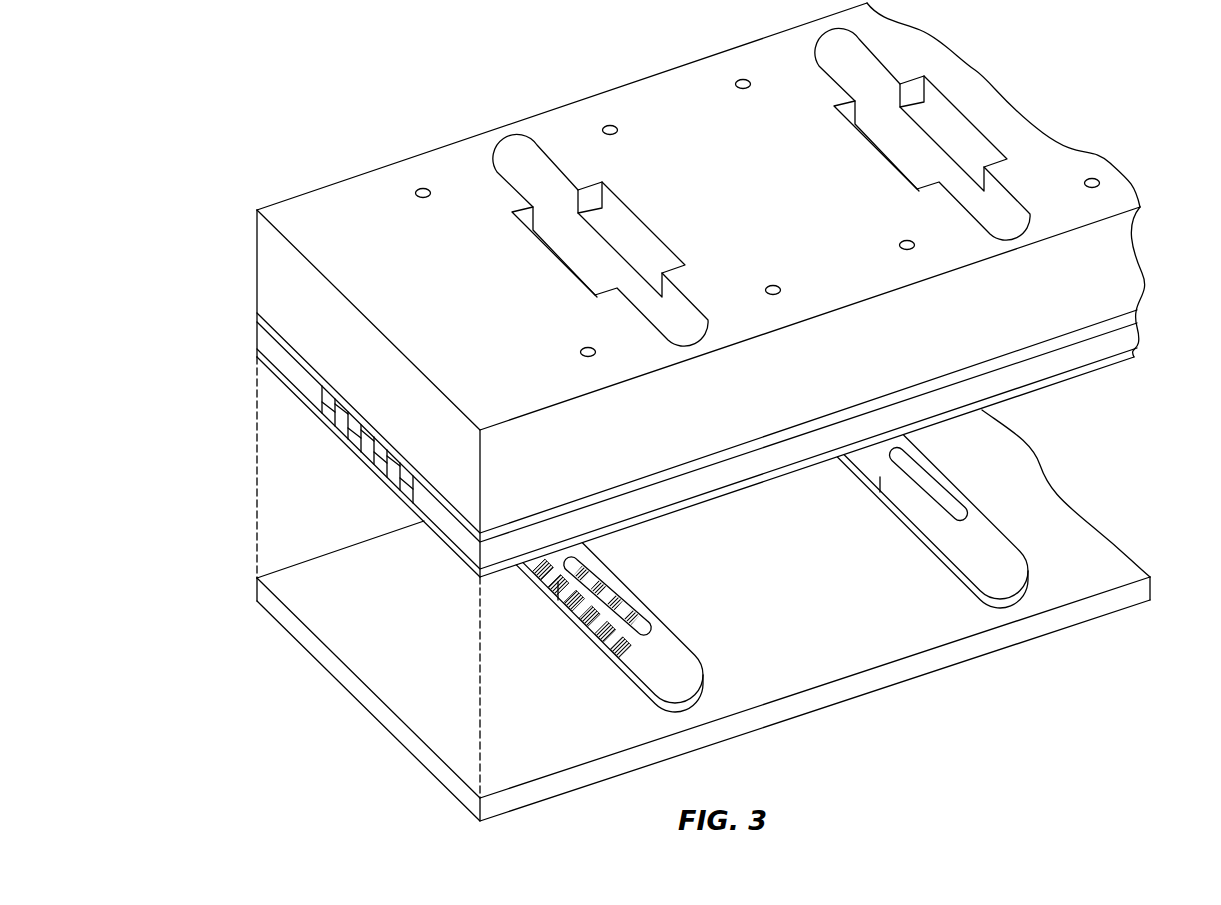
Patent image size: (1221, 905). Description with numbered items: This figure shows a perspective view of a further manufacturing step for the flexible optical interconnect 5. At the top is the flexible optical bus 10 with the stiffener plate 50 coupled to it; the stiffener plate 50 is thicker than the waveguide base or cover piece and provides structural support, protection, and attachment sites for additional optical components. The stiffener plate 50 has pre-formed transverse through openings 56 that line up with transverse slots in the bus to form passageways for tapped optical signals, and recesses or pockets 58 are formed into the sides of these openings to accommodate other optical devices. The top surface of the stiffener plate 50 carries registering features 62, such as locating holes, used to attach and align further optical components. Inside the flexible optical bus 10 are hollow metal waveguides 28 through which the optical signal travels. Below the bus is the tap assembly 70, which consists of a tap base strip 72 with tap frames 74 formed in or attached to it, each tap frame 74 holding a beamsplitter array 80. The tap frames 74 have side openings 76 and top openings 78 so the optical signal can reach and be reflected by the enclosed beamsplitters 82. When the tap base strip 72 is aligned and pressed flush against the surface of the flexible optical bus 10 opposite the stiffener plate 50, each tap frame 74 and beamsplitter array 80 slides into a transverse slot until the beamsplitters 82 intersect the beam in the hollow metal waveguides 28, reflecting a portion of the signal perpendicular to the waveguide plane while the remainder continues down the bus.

The flexible optical interconnect 5 is at (210, 228).
The flexible optical bus 10 is at (1138, 335).
The hollow metal waveguides 28 is at (355, 432).
The stiffener plate 50 is at (1128, 265).
The transverse through openings 56 is at (992, 205).
The recesses or pockets 58 is at (622, 218).
The registering features 62 is at (416, 190).
The tap assembly 70 is at (345, 723).
The tap base strip 72 is at (697, 742).
The tap frame 74 is at (688, 667).
The side openings 76 is at (927, 523).
The top openings 78 is at (950, 497).
The beamsplitter array 80 is at (579, 635).
The beamsplitters 82 is at (625, 608).